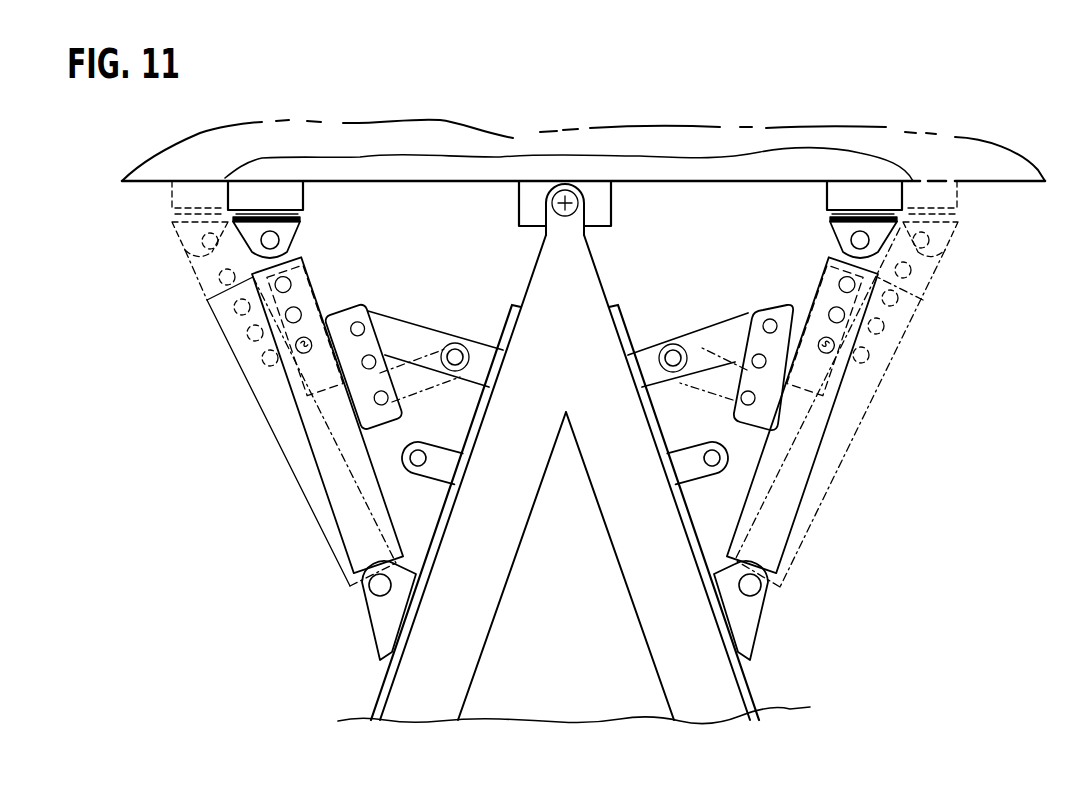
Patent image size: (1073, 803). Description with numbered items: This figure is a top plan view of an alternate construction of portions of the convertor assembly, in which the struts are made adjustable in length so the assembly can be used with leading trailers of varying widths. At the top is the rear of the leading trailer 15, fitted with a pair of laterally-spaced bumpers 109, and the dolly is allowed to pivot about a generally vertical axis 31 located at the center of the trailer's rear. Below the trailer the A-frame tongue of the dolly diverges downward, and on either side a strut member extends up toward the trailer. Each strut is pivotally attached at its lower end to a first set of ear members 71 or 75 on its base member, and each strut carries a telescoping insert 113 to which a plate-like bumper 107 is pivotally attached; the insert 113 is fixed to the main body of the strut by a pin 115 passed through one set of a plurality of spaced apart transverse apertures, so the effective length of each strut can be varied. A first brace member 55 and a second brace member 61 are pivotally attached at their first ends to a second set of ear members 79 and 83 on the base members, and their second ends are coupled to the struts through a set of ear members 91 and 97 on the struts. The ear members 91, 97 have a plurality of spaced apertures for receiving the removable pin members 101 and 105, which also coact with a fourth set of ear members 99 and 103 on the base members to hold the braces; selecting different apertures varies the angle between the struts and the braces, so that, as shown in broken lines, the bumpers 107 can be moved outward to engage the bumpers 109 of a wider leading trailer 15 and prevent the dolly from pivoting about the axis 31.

The leading trailer 15 is at (498, 145).
The vertical axis 31 is at (578, 190).
The first brace member 55 is at (422, 338).
The second brace member 61 is at (703, 333).
The first set of ear members 71 is at (378, 635).
The first set of ear members 75 is at (753, 627).
The second set of ear members 79 is at (475, 357).
The second set of ear members 83 is at (648, 373).
The set of ear members 91 is at (385, 414).
The set of ear members 97 is at (790, 318).
The fourth set of ear members 99 is at (432, 468).
The removable pin member 101 is at (360, 329).
The fourth set of ear members 103 is at (688, 473).
The removable pin member 105 is at (755, 308).
The plate-like bumper 107 is at (170, 228).
The bumpers 109 is at (175, 194).
The telescoping insert 113 is at (827, 253).
The pin 115 is at (254, 333).